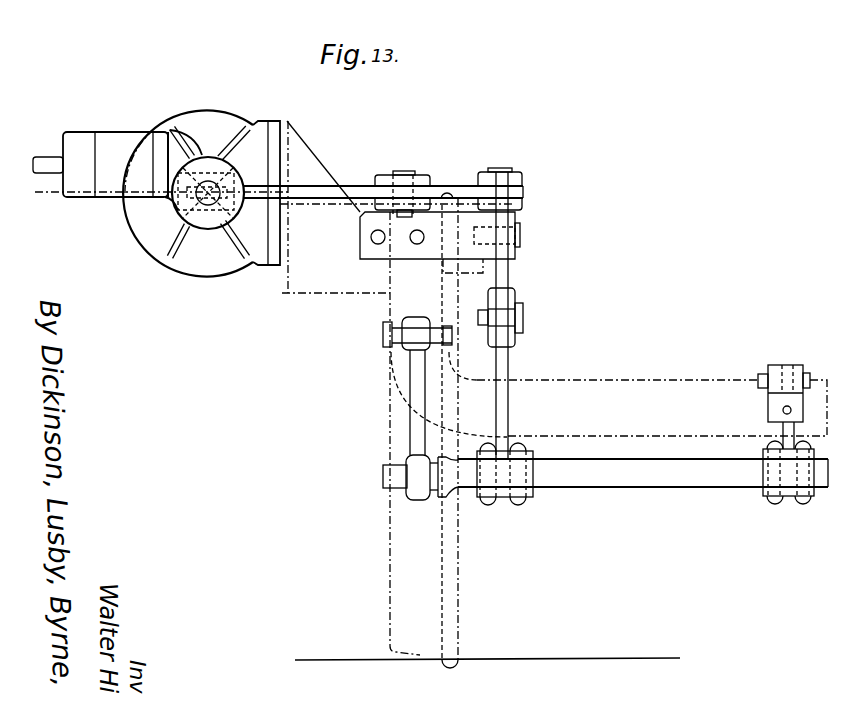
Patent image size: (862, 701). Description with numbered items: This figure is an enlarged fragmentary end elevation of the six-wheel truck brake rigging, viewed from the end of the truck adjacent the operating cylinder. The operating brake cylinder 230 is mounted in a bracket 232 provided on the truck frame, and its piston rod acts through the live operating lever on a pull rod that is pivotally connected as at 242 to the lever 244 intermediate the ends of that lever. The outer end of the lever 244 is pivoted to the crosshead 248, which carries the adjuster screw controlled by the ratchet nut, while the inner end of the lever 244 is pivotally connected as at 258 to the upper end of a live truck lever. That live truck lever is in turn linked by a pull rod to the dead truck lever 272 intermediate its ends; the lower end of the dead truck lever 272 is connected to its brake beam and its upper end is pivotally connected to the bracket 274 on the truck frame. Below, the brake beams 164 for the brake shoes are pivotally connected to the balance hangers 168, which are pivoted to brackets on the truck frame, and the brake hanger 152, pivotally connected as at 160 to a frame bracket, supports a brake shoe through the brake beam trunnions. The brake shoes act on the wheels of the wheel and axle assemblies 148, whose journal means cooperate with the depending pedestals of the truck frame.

The operating brake cylinder 230 is at (213, 120).
The crosshead 248 is at (177, 212).
The bracket 232 is at (285, 279).
The lever 244 is at (352, 185).
The pivotal connection 242 is at (405, 171).
The pivotal connection 258 is at (518, 175).
The bracket 274 is at (412, 253).
The wheel and axle assemblies 148 is at (453, 563).
The dead truck lever 272 is at (508, 355).
The brake hanger 152 is at (415, 428).
The pivotal connection 160 is at (383, 343).
The brake beams 164 is at (633, 480).
The balance hangers 168 is at (783, 426).